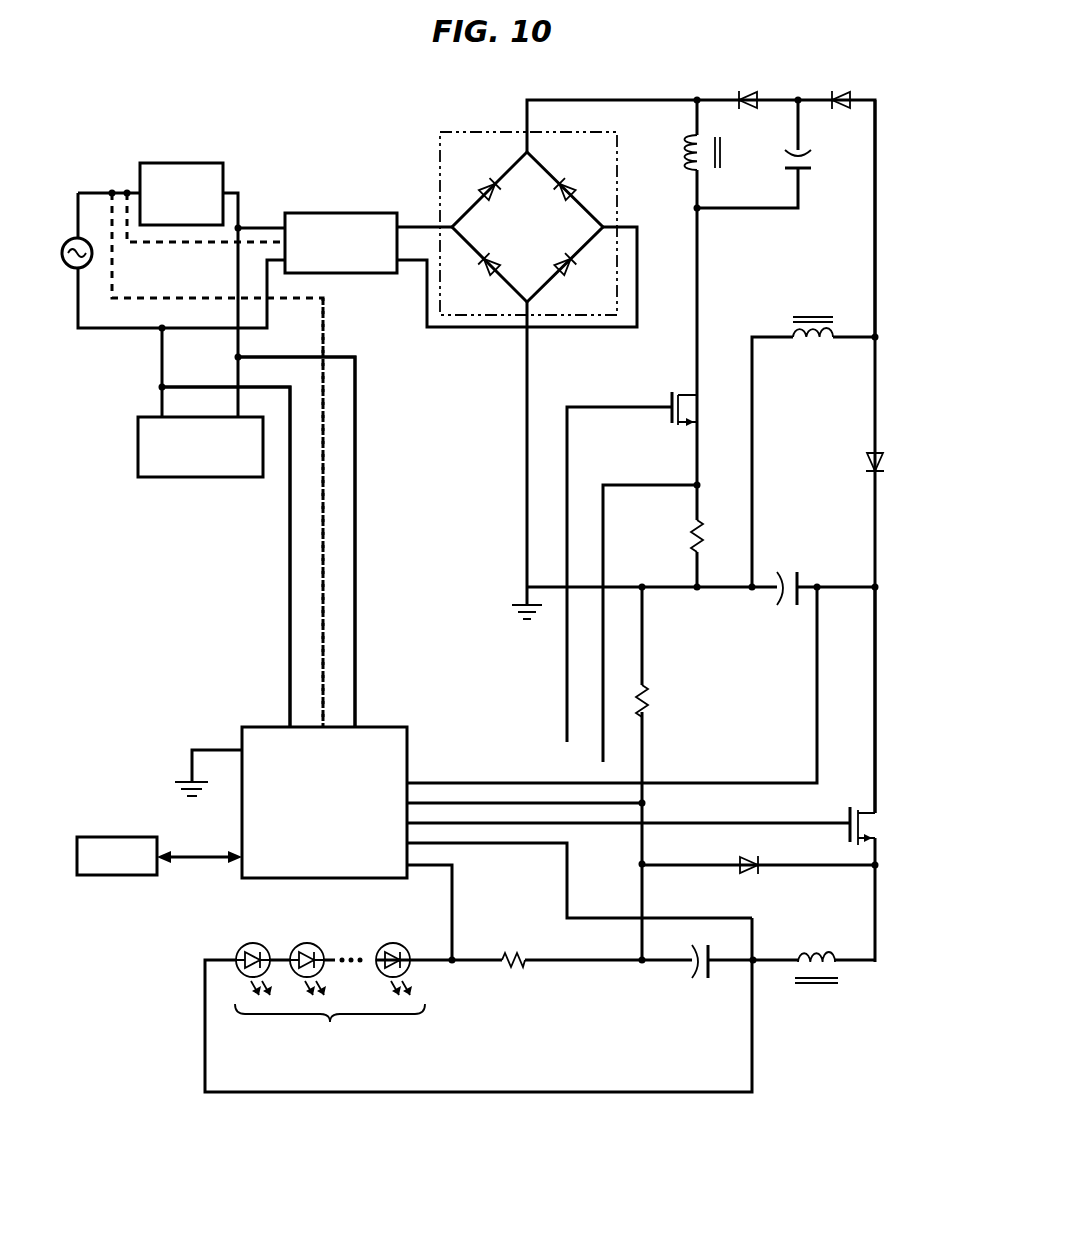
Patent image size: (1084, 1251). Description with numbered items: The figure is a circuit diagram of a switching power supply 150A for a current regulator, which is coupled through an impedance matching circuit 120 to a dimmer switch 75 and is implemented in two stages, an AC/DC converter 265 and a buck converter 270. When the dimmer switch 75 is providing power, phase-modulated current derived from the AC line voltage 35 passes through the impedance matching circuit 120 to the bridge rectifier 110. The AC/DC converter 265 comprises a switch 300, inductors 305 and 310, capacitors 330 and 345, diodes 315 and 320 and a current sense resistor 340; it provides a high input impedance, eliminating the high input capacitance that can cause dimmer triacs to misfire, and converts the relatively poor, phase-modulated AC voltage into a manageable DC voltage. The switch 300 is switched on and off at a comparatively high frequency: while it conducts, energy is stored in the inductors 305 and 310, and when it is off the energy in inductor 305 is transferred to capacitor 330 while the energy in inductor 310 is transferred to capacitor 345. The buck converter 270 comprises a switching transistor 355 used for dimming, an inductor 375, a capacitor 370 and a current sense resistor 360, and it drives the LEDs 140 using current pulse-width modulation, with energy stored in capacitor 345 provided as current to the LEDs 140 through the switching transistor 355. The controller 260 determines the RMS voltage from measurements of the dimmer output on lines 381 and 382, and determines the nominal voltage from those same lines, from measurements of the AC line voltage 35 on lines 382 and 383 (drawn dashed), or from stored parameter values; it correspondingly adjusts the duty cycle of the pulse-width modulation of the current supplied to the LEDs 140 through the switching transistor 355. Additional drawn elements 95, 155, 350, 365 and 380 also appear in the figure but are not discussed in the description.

The AC line voltage 35 is at (84, 241).
The dimmer switch 75 is at (153, 163).
The impedance matching circuit 120 is at (305, 213).
The bridge rectifier 110 is at (462, 132).
The incandescent lamp 95 is at (138, 432).
The line 381 is at (355, 420).
The line 382 is at (290, 533).
The line 383 is at (323, 505).
The controller 260 is at (255, 727).
The memory 155 is at (97, 837).
The LEDs 140 is at (330, 995).
The switching power supply 150A is at (444, 1107).
The inductor L2 305 is at (683, 151).
The diode D1 315 is at (738, 93).
The diode D2 320 is at (850, 92).
The capacitor C4 330 is at (810, 172).
The AC/DC converter 265 is at (889, 231).
The switch Q1 300 is at (668, 393).
The inductor L3 310 is at (803, 348).
The diode D3 350 is at (866, 460).
The current sense resistor R2 340 is at (689, 535).
The capacitor C5 345 is at (788, 570).
The current sense resistor R4 360 is at (645, 685).
The buck converter 270 is at (889, 747).
The switching transistor Q2 355 is at (846, 815).
The diode D4 365 is at (758, 872).
The capacitor C3 370 is at (700, 985).
The inductor L4 375 is at (820, 988).
The resistor R5 380 is at (522, 970).